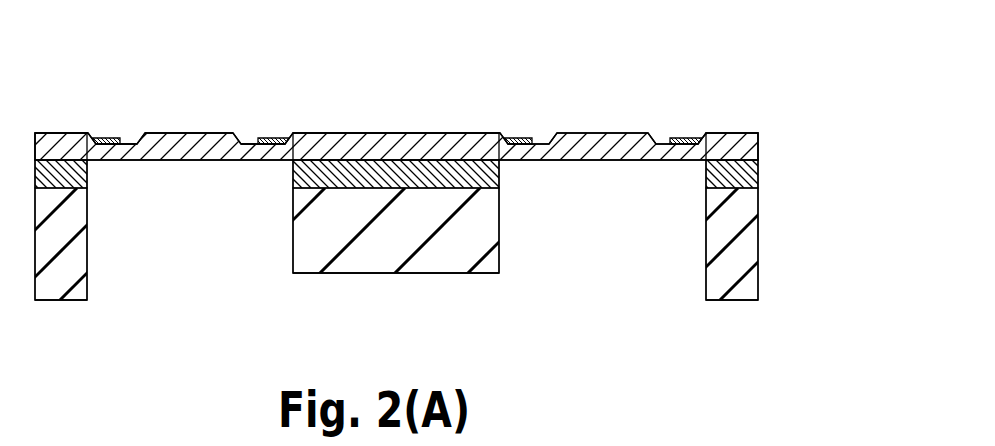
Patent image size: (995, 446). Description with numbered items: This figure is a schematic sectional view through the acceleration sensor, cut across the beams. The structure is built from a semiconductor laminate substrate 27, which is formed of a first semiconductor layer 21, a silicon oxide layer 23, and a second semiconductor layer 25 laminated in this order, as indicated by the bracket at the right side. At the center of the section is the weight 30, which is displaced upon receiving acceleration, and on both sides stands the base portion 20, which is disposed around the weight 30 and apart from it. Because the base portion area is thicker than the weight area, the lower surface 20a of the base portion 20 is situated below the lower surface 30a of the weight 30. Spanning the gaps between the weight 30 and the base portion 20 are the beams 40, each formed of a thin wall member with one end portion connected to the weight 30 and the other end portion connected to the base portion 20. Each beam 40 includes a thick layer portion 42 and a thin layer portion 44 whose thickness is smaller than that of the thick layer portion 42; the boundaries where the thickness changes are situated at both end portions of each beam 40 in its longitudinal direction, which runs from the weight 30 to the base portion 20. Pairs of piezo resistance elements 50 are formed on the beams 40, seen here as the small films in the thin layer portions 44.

The base portion 20 is at (87, 323).
The lower surface of the base portion 20a is at (77, 305).
The first semiconductor layer 21 is at (743, 245).
The silicon oxide layer 23 is at (742, 173).
The second semiconductor layer 25 is at (758, 145).
The semiconductor laminate substrate 27 is at (822, 142).
The weight 30 is at (500, 323).
The lower surface of the weight 30a is at (487, 278).
The beam 40 is at (172, 148).
The thick layer portion 42 is at (112, 121).
The thin layer portion 44 is at (137, 108).
The piezo resistance element 50 is at (688, 136).